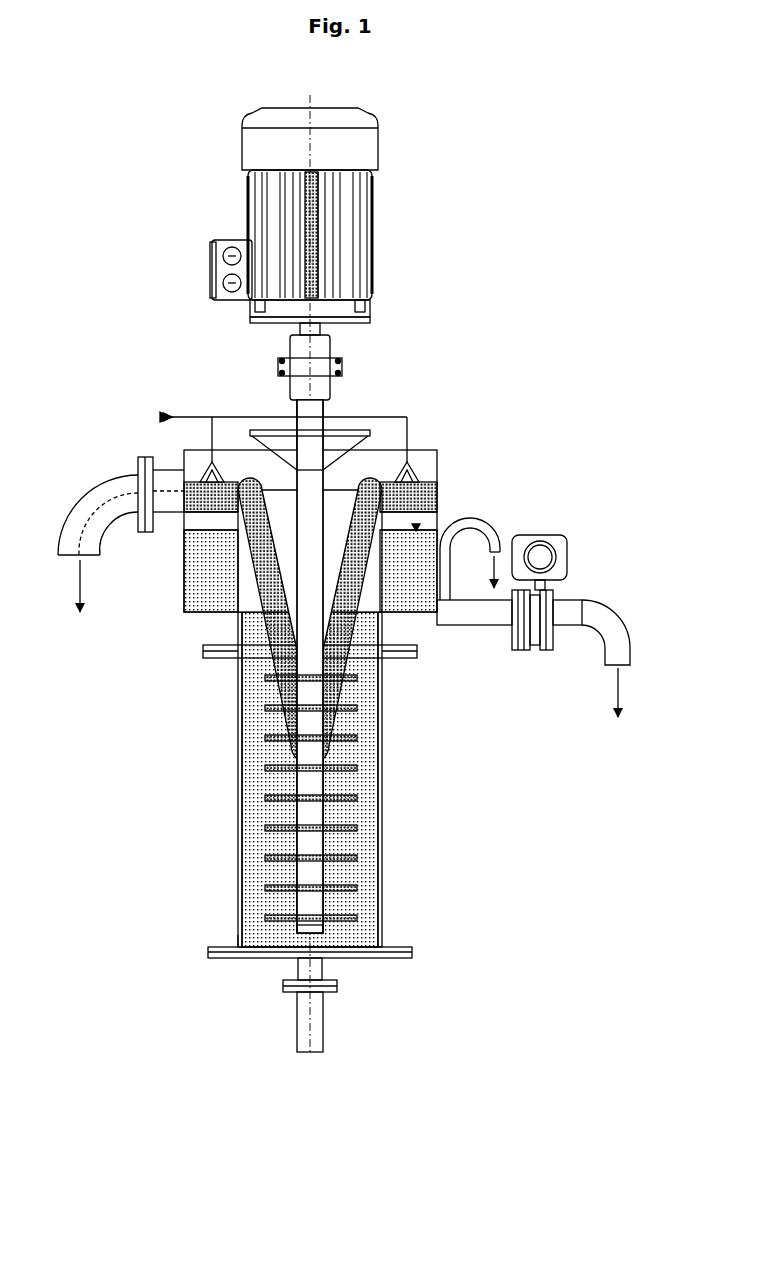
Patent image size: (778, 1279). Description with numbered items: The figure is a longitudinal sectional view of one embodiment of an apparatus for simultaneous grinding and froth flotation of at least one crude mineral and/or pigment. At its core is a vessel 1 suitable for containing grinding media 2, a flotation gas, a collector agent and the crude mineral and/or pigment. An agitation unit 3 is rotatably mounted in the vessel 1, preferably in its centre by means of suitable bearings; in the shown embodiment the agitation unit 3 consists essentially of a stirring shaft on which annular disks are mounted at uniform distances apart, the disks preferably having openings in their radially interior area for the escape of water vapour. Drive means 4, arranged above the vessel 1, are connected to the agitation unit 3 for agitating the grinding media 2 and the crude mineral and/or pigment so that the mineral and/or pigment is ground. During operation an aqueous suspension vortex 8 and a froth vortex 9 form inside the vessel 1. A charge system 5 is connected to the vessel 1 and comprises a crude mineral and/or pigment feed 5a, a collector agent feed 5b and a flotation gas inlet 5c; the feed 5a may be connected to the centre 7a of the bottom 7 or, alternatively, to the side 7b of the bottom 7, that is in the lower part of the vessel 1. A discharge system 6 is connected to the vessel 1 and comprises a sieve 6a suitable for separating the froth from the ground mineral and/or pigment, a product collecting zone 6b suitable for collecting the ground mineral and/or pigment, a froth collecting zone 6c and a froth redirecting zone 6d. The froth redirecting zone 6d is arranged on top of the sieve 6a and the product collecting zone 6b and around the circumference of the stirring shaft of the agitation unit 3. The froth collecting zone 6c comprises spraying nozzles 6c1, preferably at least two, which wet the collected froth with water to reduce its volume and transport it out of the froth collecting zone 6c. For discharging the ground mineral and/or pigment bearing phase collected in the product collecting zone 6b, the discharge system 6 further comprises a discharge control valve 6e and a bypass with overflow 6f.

The vessel 1 is at (238, 832).
The grinding media 2 is at (260, 901).
The agitation unit 3 is at (308, 640).
The drive means 4 is at (378, 266).
The charge system 5 is at (316, 1040).
The crude mineral and/or pigment feed 5a is at (310, 1055).
The collector agent feed 5b is at (325, 1030).
The flotation gas inlet 5c is at (295, 1030).
The discharge system 6 is at (310, 531).
The sieve 6a is at (310, 666).
The product collecting zone 6b is at (206, 578).
The froth collecting zone 6c is at (205, 496).
The spraying nozzles 6c1 is at (290, 421).
The froth redirecting zone 6d is at (333, 447).
The discharge control valve 6e is at (542, 555).
The bypass with overflow 6f is at (487, 536).
The bottom 7 is at (272, 958).
The centre of the bottom 7a is at (316, 958).
The side of the bottom 7b is at (238, 938).
The aqueous suspension vortex 8 is at (258, 754).
The froth vortex 9 is at (275, 702).